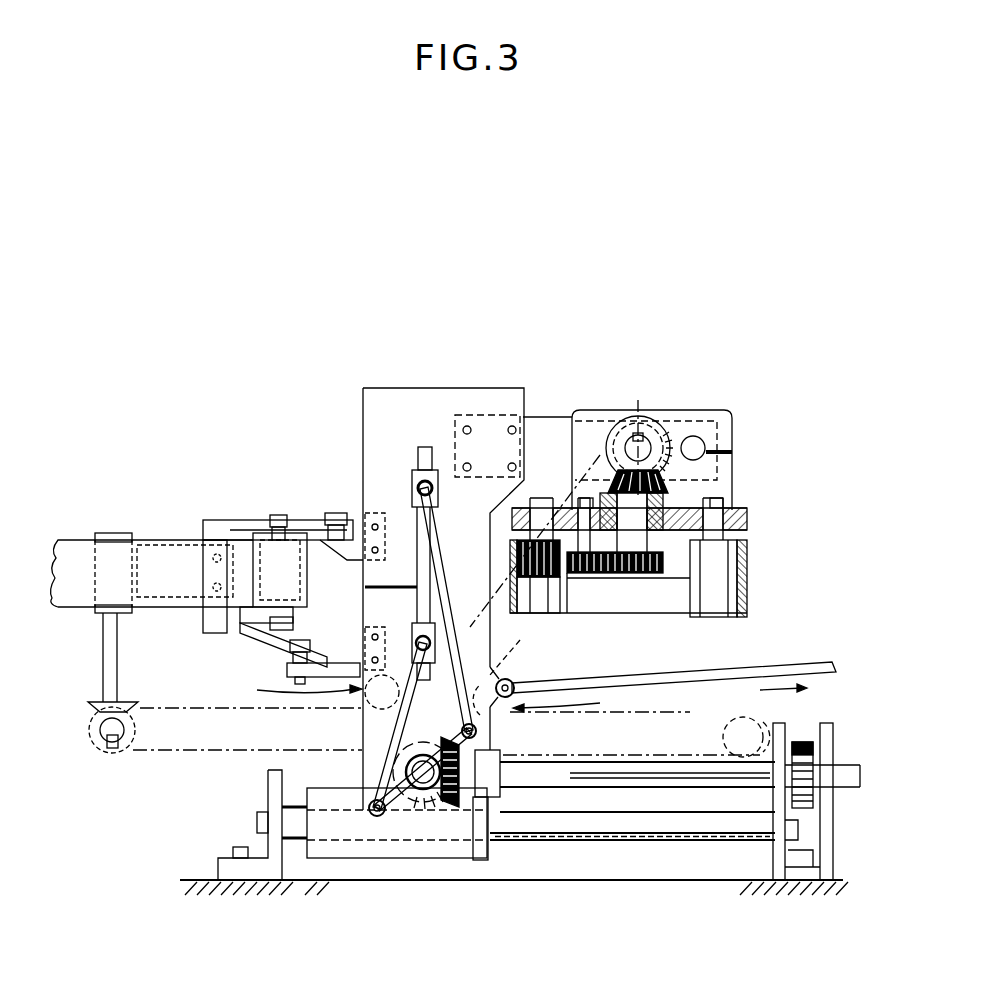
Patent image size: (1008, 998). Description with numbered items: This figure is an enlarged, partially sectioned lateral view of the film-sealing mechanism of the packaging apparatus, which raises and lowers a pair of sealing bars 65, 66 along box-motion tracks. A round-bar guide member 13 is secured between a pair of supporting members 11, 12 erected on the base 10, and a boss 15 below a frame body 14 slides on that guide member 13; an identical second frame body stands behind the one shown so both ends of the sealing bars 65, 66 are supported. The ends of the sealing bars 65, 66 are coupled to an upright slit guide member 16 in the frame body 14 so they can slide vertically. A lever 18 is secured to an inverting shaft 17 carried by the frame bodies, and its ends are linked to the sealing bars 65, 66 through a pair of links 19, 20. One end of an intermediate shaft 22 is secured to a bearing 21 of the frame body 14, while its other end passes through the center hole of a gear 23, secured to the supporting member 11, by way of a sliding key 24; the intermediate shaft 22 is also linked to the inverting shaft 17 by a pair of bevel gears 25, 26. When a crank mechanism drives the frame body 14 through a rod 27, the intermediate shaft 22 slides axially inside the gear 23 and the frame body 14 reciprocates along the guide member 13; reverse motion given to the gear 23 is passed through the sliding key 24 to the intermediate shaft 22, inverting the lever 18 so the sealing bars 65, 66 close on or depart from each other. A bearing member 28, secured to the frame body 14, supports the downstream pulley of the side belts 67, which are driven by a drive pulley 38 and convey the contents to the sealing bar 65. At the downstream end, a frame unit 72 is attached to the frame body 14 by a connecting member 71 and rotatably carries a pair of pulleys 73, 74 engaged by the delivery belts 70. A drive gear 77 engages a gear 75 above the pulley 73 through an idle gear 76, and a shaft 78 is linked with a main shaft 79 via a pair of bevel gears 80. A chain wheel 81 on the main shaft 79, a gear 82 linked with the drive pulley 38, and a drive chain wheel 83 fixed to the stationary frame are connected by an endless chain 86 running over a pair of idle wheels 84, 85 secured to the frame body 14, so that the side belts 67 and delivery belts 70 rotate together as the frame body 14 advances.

The base 10 is at (575, 882).
The supporting member 11 is at (815, 848).
The supporting member 12 is at (268, 790).
The round-bar guide member 13 is at (620, 810).
The frame body 14 is at (363, 407).
The boss 15 is at (340, 774).
The slit guide member 16 is at (417, 505).
The inverting shaft 17 is at (421, 790).
The lever 18 is at (397, 795).
The link 19 is at (438, 588).
The link 20 is at (372, 745).
The bearing 21 is at (503, 765).
The intermediate shaft 22 is at (540, 775).
The gear 23 is at (808, 733).
The sliding key 24 is at (720, 770).
The bevel gear 25 is at (458, 812).
The bevel gear 26 is at (447, 806).
The rod 27 is at (686, 684).
The bearing member 28 is at (233, 520).
The drive pulley 38 is at (128, 612).
The sealing bar 65 is at (413, 482).
The sealing bar 66 is at (412, 632).
The side belt 67 is at (118, 540).
The delivery belt 70 is at (627, 630).
The connecting member 71 is at (548, 428).
The frame unit 72 is at (708, 412).
The pulley 73 is at (548, 615).
The pulley 74 is at (745, 717).
The gear 75 is at (556, 578).
The idle gear 76 is at (623, 576).
The drive gear 77 is at (668, 580).
The shaft 78 is at (683, 507).
The main shaft 79 is at (618, 440).
The bevel gear 80 is at (668, 486).
The chain wheel 81 is at (606, 428).
The gear 82 is at (92, 748).
The drive chain wheel 83 is at (768, 692).
The idle wheel 84 is at (309, 691).
The idle wheel 85 is at (575, 710).
The endless chain 86 is at (513, 683).